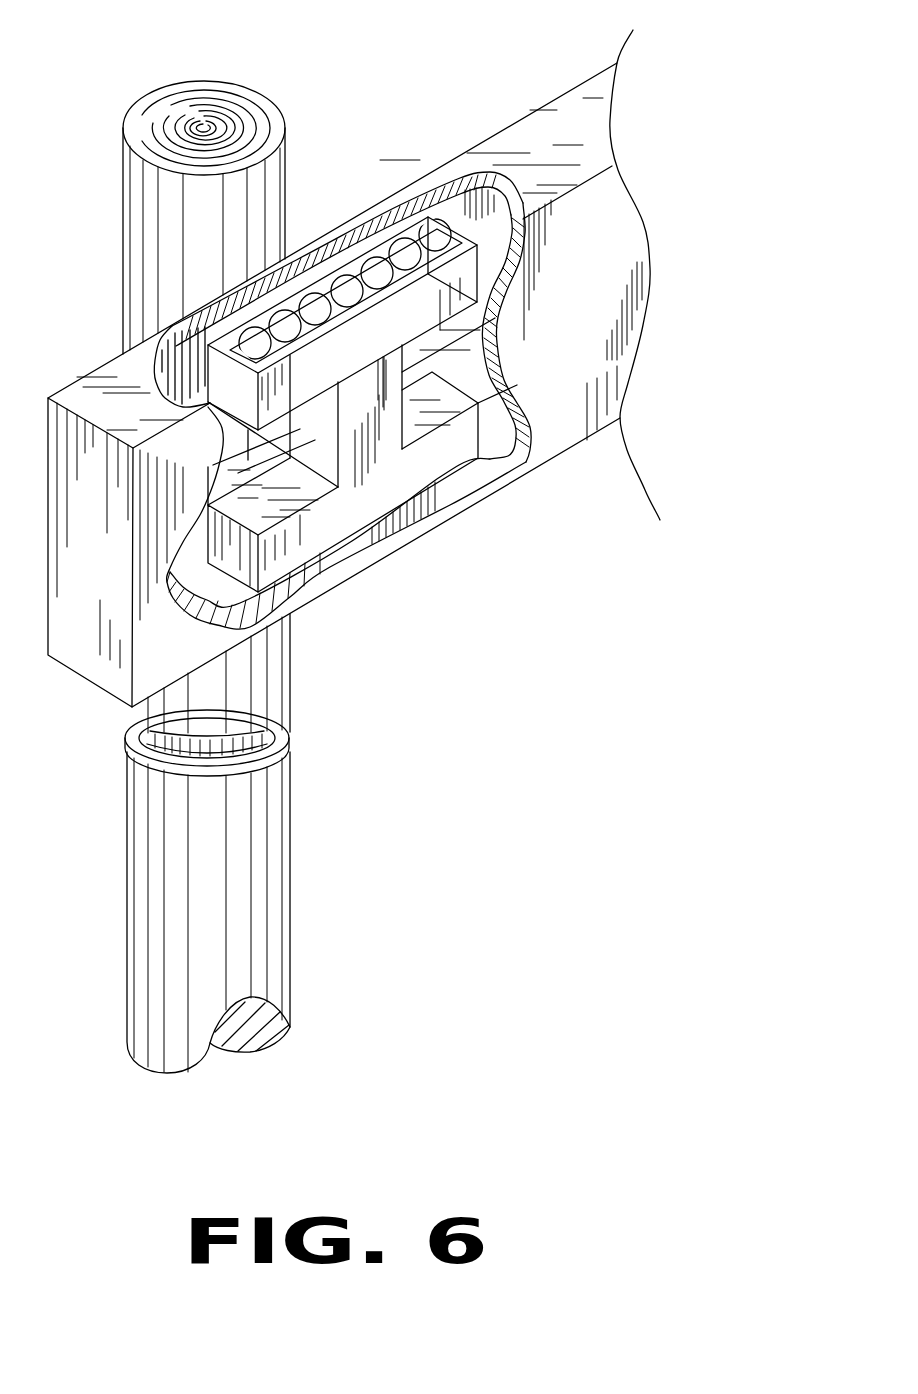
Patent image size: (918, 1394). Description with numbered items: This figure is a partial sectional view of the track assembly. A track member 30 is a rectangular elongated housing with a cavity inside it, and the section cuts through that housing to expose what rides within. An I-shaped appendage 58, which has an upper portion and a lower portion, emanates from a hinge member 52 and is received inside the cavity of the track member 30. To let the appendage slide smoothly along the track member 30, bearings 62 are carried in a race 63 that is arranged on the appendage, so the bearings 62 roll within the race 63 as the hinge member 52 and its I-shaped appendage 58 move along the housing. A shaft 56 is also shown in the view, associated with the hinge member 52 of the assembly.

The track member 30 is at (537, 450).
The hinge member 52 is at (283, 655).
The shaft 56 is at (237, 743).
The I-shaped appendage 58 is at (397, 480).
The bearing 62 is at (377, 263).
The race 63 is at (398, 205).